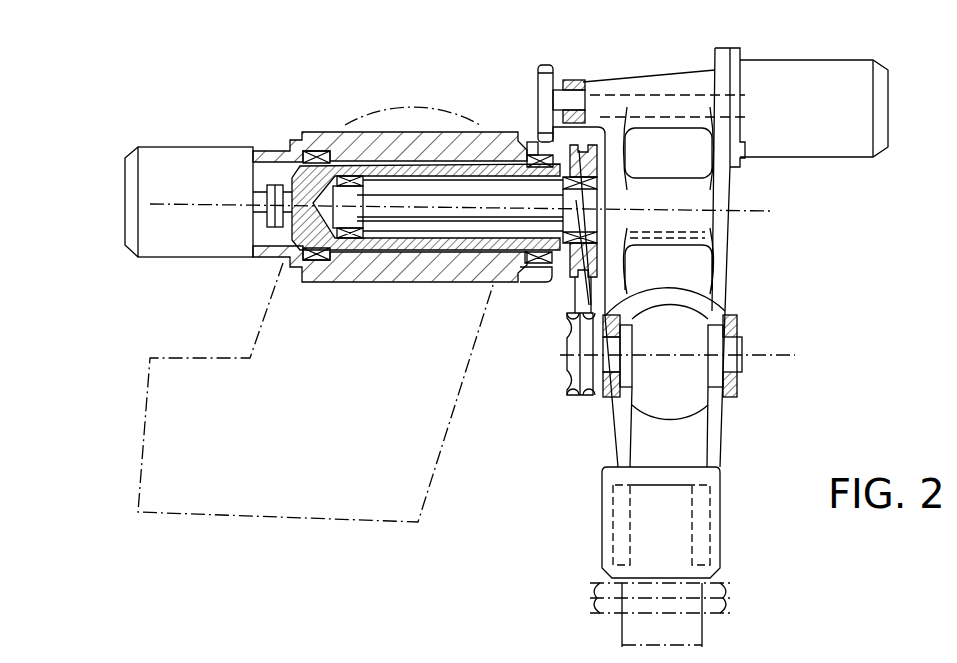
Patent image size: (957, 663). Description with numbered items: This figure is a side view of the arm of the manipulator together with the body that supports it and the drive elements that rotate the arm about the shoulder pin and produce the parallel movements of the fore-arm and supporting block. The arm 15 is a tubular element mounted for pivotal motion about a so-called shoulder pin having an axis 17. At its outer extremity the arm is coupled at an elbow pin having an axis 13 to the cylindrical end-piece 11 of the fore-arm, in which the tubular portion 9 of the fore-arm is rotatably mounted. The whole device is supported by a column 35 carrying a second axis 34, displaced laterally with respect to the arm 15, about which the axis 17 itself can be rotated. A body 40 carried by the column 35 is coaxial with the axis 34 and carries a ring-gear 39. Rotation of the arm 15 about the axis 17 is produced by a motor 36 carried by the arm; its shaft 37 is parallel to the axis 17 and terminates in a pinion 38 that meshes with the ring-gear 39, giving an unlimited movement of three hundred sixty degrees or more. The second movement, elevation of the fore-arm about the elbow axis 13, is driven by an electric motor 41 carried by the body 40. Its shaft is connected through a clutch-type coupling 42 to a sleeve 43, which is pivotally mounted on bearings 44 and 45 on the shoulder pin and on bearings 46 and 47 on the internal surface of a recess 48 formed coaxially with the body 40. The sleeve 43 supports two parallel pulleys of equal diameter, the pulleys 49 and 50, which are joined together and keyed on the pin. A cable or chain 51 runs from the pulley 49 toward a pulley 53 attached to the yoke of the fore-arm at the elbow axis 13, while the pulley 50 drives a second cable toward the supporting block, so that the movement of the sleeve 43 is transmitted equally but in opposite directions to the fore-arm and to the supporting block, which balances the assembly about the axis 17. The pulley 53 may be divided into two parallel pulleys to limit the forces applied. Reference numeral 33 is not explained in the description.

The tubular portion 9 is at (705, 634).
The cylindrical end-piece 11 is at (722, 494).
The elbow axis 13 is at (758, 352).
The arm 15 is at (700, 292).
The shoulder pin axis 17 is at (752, 211).
The clamp 33 is at (590, 588).
The second axis 34 is at (410, 207).
The column 35 is at (375, 431).
The motor 36 is at (775, 60).
The motor shaft 37 is at (578, 98).
The pinion 38 is at (543, 63).
The ring-gear 39 is at (540, 280).
The body 40 is at (428, 108).
The electric motor 41 is at (188, 150).
The clutch-type coupling 42 is at (273, 185).
The sleeve 43 is at (407, 165).
The bearing 44 is at (353, 176).
The bearing 45 is at (585, 183).
The bearing 46 is at (317, 153).
The bearing 47 is at (533, 153).
The recess 48 is at (477, 158).
The pulley 49 is at (577, 275).
The pulley 50 is at (595, 290).
The cable or chain 51 is at (573, 300).
The pulley 53 is at (580, 396).